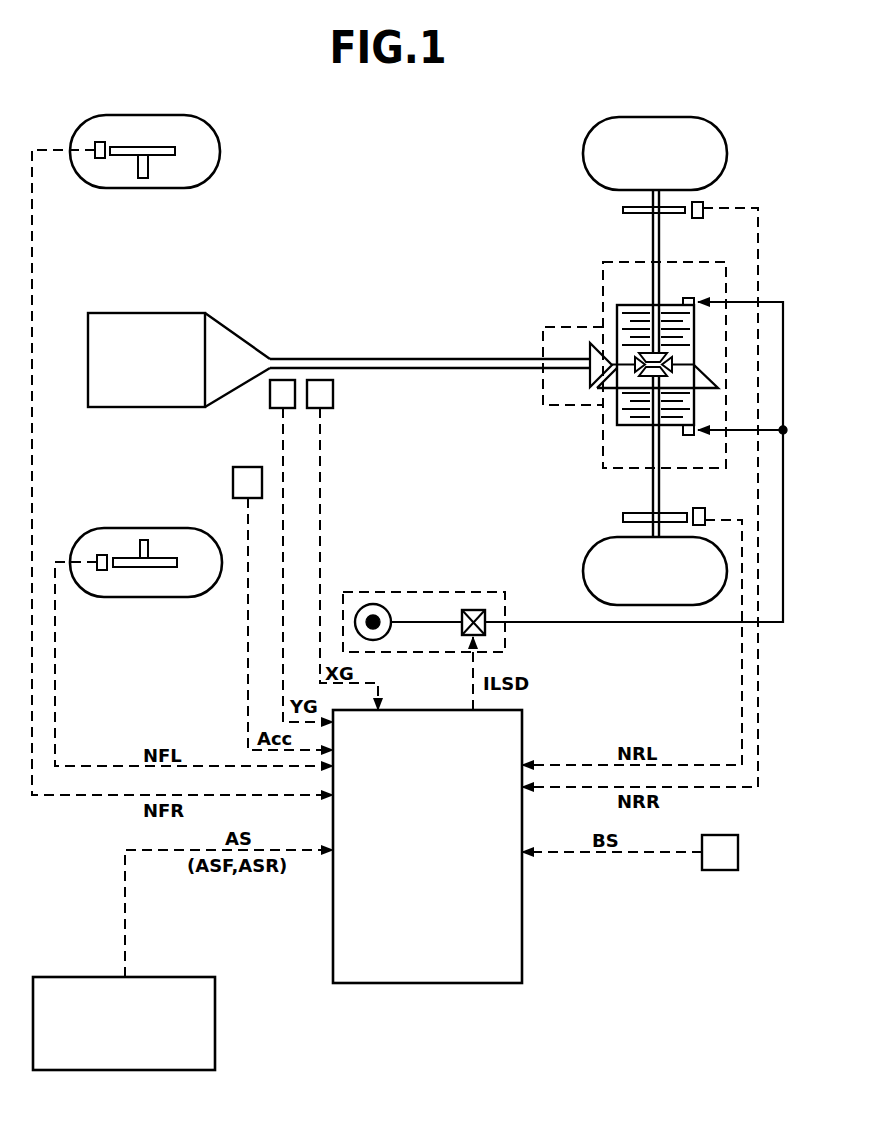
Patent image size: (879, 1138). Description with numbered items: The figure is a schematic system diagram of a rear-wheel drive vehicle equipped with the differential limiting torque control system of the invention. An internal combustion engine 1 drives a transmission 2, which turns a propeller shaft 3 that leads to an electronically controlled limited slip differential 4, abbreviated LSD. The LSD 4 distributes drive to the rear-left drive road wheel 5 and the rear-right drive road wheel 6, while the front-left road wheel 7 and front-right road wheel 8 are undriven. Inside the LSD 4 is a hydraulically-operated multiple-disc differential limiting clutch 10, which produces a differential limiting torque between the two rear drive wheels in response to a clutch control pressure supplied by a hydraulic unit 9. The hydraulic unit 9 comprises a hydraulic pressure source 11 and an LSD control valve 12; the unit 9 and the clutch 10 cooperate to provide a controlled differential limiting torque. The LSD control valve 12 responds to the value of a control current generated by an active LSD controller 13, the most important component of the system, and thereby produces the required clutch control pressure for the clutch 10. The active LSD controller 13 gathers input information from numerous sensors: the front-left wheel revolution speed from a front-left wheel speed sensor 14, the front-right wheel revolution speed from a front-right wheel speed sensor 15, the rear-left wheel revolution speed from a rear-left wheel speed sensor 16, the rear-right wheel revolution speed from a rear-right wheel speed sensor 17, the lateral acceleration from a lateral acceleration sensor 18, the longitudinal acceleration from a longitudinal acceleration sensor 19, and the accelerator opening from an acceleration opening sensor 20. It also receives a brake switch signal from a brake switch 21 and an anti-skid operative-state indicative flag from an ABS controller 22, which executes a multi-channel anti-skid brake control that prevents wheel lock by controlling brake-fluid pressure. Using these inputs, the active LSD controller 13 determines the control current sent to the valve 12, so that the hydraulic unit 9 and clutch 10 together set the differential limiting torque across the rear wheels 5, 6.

The internal combustion engine 1 is at (178, 398).
The transmission 2 is at (227, 383).
The propeller shaft 3 is at (470, 358).
The limited slip differential 4 is at (598, 255).
The rear-left drive road wheel 5 is at (583, 565).
The rear-right drive road wheel 6 is at (622, 117).
The front-left road wheel 7 is at (121, 597).
The front-right road wheel 8 is at (175, 115).
The hydraulic unit 9 is at (395, 590).
The differential limiting clutch 10 is at (698, 403).
The hydraulic pressure source 11 is at (388, 632).
The LSD control valve 12 is at (478, 610).
The active LSD controller 13 is at (522, 940).
The front-left wheel speed sensor 14 is at (100, 555).
The front-right wheel speed sensor 15 is at (99, 158).
The rear-left wheel speed sensor 16 is at (705, 513).
The rear-right wheel speed sensor 17 is at (704, 215).
The lateral acceleration sensor 18 is at (286, 409).
The longitudinal acceleration sensor 19 is at (324, 409).
The acceleration opening sensor 20 is at (233, 482).
The brake switch 21 is at (738, 843).
The ABS controller 22 is at (215, 1022).